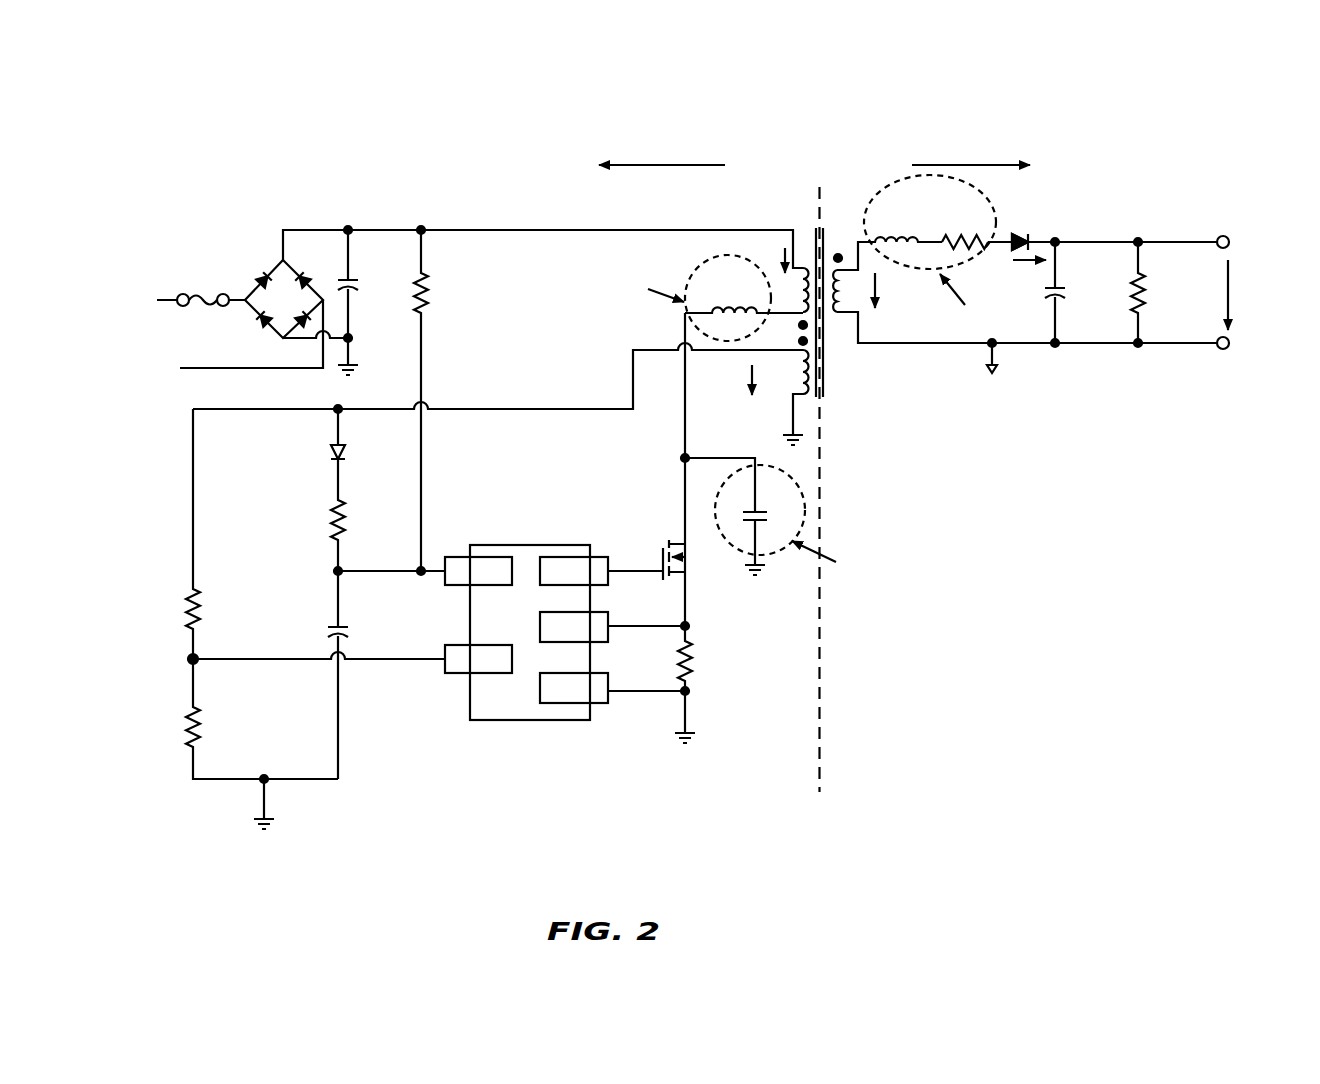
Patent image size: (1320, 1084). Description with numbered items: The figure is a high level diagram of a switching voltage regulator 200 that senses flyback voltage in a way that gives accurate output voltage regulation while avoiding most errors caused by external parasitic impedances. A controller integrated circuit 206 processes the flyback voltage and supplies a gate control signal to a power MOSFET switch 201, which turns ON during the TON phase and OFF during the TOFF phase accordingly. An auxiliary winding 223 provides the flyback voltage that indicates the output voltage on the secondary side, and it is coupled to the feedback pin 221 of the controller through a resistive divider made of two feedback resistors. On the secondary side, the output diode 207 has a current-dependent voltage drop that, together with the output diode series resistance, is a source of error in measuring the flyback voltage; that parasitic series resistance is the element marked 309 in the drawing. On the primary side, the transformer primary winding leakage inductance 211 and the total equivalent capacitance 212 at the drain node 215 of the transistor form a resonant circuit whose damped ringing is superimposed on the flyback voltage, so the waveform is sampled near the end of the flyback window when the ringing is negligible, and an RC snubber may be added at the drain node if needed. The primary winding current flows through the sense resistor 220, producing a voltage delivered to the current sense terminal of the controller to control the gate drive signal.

The switching voltage regulator 200 is at (994, 782).
The power MOSFET switch 201 is at (700, 580).
The controller integrated circuit 206 is at (518, 720).
The output diode Dout 207 is at (1057, 199).
The transformer primary winding leakage inductance Llkp 211 is at (700, 268).
The total equivalent capacitance Cd 212 is at (807, 500).
The drain node 215 is at (689, 456).
The sense resistor 220 is at (710, 684).
The feedback (FB) pin 221 is at (455, 674).
The auxiliary winding 223 is at (815, 399).
The parasitic output resistance Rdout 309 is at (953, 248).